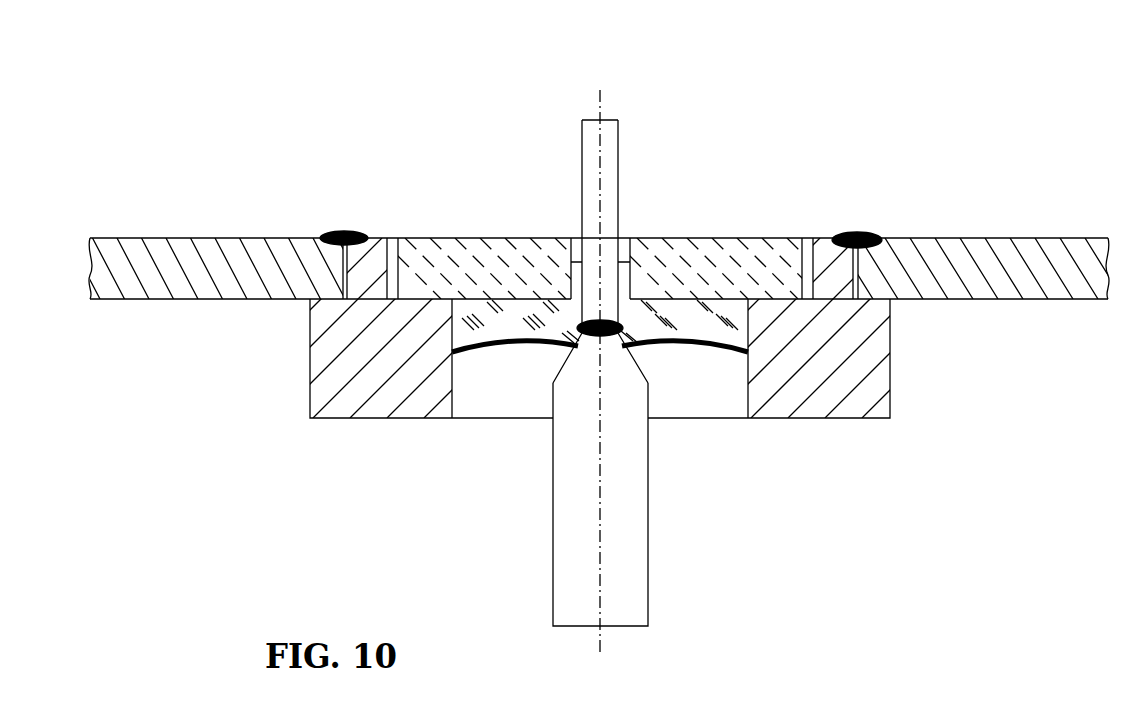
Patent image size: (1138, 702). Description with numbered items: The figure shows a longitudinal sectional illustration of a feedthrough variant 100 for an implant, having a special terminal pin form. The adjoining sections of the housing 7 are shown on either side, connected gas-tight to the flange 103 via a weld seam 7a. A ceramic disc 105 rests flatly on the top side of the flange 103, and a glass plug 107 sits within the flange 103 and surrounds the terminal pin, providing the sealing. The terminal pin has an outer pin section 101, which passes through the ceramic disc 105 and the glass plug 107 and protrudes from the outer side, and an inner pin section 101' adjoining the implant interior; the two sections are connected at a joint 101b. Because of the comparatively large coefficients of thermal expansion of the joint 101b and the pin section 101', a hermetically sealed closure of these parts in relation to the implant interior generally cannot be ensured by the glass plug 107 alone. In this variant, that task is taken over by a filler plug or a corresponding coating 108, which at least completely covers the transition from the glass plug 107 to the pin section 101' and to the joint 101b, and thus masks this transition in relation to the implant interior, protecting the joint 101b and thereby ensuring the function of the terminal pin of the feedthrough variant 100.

The feedthrough variant 100 is at (905, 95).
The terminal pin 101 is at (651, 224).
The joint 101b is at (600, 337).
The pin section 101' is at (652, 504).
The flange 103 is at (875, 348).
The ceramic disc 105 is at (750, 240).
The glass plug 107 is at (533, 327).
The filler plug or coating 108 is at (539, 349).
The housing 7 is at (988, 240).
The weld seam 7a is at (860, 233).